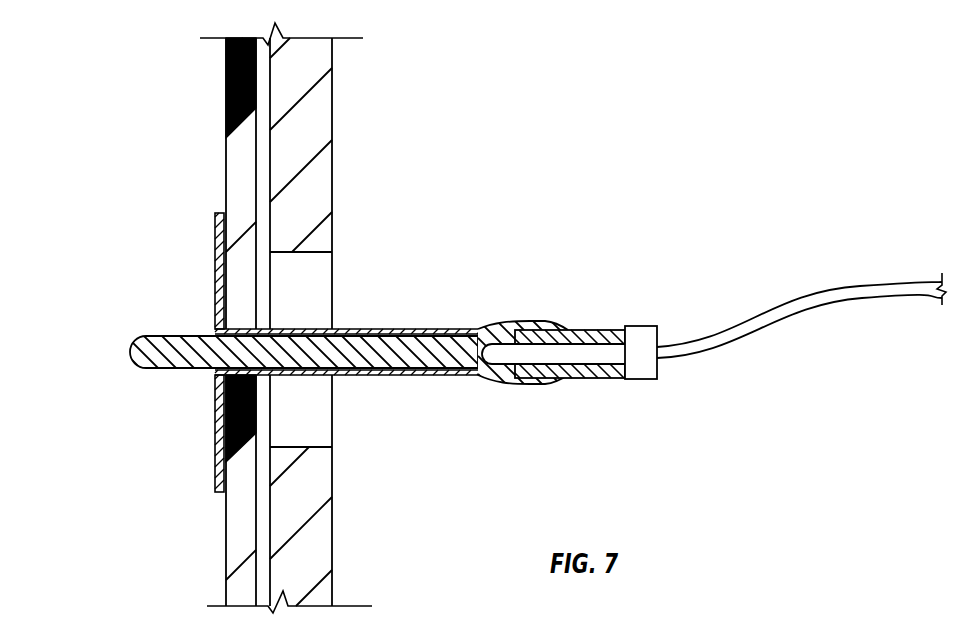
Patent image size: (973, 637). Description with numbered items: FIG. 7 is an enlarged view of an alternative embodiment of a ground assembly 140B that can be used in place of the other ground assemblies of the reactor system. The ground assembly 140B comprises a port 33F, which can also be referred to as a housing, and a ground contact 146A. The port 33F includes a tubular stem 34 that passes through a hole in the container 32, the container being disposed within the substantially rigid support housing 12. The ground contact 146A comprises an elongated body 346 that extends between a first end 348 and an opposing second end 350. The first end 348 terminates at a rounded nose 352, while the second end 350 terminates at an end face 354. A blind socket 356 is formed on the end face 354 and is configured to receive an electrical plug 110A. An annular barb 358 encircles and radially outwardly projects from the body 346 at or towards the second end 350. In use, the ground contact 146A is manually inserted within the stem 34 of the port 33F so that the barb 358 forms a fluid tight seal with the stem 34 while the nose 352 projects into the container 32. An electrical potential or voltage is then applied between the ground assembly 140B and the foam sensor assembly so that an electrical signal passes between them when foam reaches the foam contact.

The support housing 12 is at (332, 105).
The container 32 is at (226, 82).
The port 33F is at (215, 243).
The stem 34 is at (368, 328).
The elongated body 346 is at (310, 328).
The ground contact 146A is at (368, 378).
The rounded nose 352 is at (130, 345).
The first end 348 is at (168, 384).
The annular barb 358 is at (507, 378).
The second end 350 is at (570, 390).
The blind socket 356 is at (541, 348).
The electrical plug 110A is at (576, 350).
The end face 354 is at (645, 325).
The ground assembly 140B is at (488, 310).